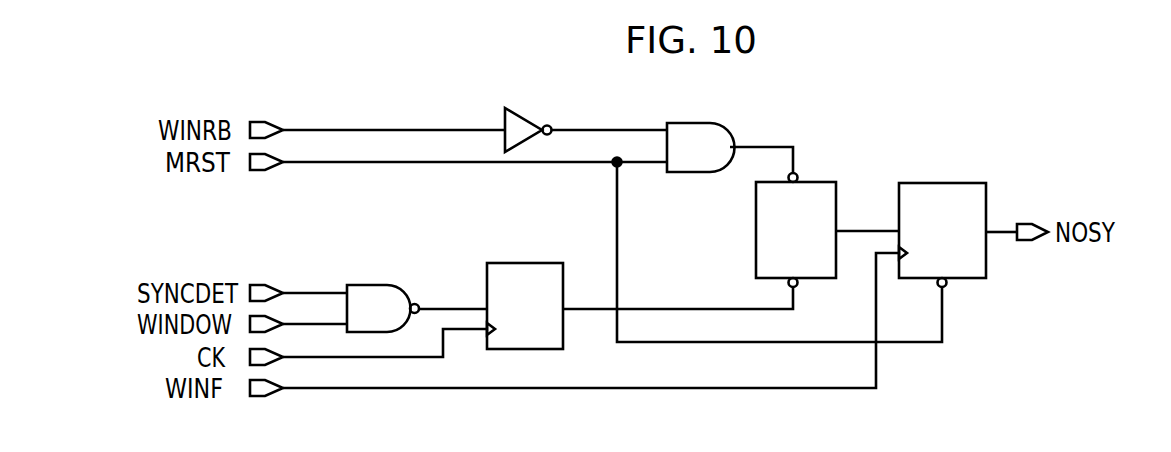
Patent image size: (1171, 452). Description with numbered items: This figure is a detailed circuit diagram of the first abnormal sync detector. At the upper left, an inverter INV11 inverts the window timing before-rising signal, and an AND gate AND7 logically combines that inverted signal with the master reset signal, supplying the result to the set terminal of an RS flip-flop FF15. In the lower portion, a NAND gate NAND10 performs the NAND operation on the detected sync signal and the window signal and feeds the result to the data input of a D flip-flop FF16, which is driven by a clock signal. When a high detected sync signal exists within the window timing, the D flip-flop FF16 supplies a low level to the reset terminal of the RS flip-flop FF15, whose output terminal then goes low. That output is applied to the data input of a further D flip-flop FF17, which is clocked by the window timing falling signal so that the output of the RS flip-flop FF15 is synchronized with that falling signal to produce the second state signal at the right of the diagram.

The inverter INV11 is at (557, 98).
The AND gate AND7 is at (736, 98).
The RS flip-flop FF15 is at (822, 182).
The D flip-flop FF16 is at (548, 263).
The D flip-flop FF17 is at (965, 183).
The NAND gate NAND10 is at (398, 262).